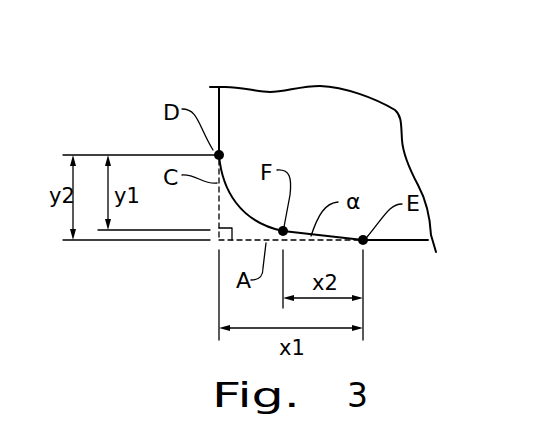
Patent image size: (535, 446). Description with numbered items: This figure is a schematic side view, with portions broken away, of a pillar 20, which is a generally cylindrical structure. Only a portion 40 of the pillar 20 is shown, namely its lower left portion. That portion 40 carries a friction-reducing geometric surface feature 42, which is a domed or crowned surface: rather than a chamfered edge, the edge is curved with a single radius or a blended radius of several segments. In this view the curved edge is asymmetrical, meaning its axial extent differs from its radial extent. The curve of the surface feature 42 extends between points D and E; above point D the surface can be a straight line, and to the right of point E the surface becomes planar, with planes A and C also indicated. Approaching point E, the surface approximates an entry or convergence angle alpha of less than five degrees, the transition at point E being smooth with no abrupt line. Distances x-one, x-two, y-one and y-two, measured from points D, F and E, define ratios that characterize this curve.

The pillar 20 is at (405, 130).
The portion of pillar 40 is at (272, 80).
The friction-reducing geometric surface feature 42 is at (318, 237).